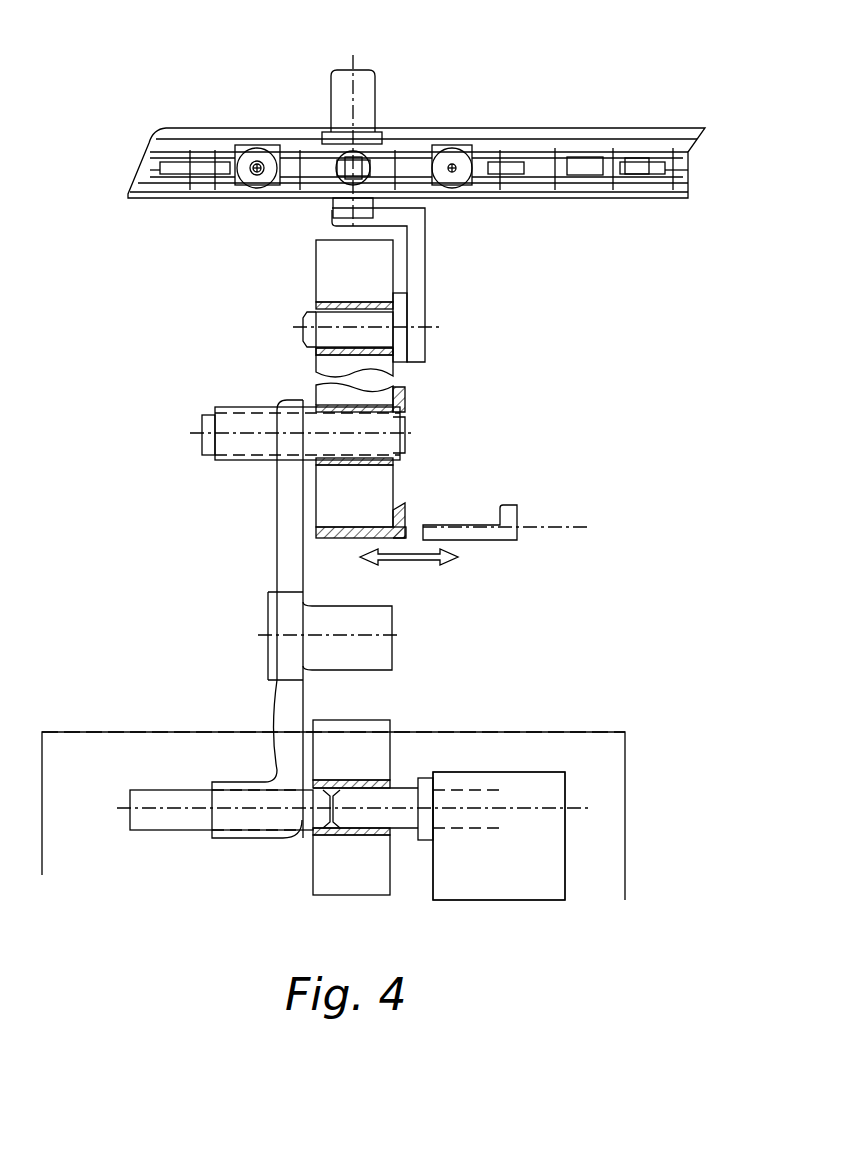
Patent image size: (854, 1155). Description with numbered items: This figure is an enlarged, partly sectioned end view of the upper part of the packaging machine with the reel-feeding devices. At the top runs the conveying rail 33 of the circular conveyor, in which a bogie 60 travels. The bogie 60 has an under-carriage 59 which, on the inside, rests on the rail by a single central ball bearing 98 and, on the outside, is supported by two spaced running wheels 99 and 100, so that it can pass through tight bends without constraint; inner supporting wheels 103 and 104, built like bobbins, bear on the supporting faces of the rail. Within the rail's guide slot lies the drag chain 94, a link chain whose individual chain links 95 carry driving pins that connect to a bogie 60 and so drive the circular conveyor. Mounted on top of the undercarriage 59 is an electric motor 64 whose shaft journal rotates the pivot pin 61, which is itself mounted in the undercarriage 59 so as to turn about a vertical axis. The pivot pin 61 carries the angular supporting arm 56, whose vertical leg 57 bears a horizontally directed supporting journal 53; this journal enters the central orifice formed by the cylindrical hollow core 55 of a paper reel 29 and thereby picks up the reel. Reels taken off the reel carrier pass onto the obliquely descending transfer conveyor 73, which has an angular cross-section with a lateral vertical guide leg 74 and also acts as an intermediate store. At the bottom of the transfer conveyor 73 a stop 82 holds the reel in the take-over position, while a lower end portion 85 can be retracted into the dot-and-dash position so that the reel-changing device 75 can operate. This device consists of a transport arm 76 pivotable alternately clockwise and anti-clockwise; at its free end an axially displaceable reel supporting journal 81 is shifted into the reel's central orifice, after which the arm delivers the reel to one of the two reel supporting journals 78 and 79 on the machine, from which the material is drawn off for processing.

The conveying rail 33 is at (563, 112).
The bogie 60 is at (433, 108).
The under-carriage 59 is at (250, 146).
The supporting wheel 103 is at (300, 148).
The ball bearing 98 is at (330, 142).
The electric motor 64 is at (366, 86).
The supporting wheel 104 is at (396, 148).
The running wheel 100 is at (456, 166).
The running wheel 99 is at (243, 188).
The pivot pin 61 is at (302, 206).
The supporting arm 56 is at (434, 254).
The vertical leg 57 is at (417, 288).
The paper reel 29 is at (332, 258).
The supporting journal 53 is at (323, 318).
The hollow core 55 is at (341, 353).
The stop 82 is at (408, 398).
The reel supporting journal 81 is at (376, 424).
The guide leg 74 is at (406, 518).
The lower end portion 85 is at (522, 522).
The transfer conveyor 73 is at (337, 540).
The transport arm 76 is at (284, 516).
The reel-changing device 75 is at (562, 642).
The reel supporting journal 78 is at (400, 800).
The reel supporting journal 79 is at (511, 776).
The drag chain 94 is at (588, 176).
The chain link 95 is at (643, 182).